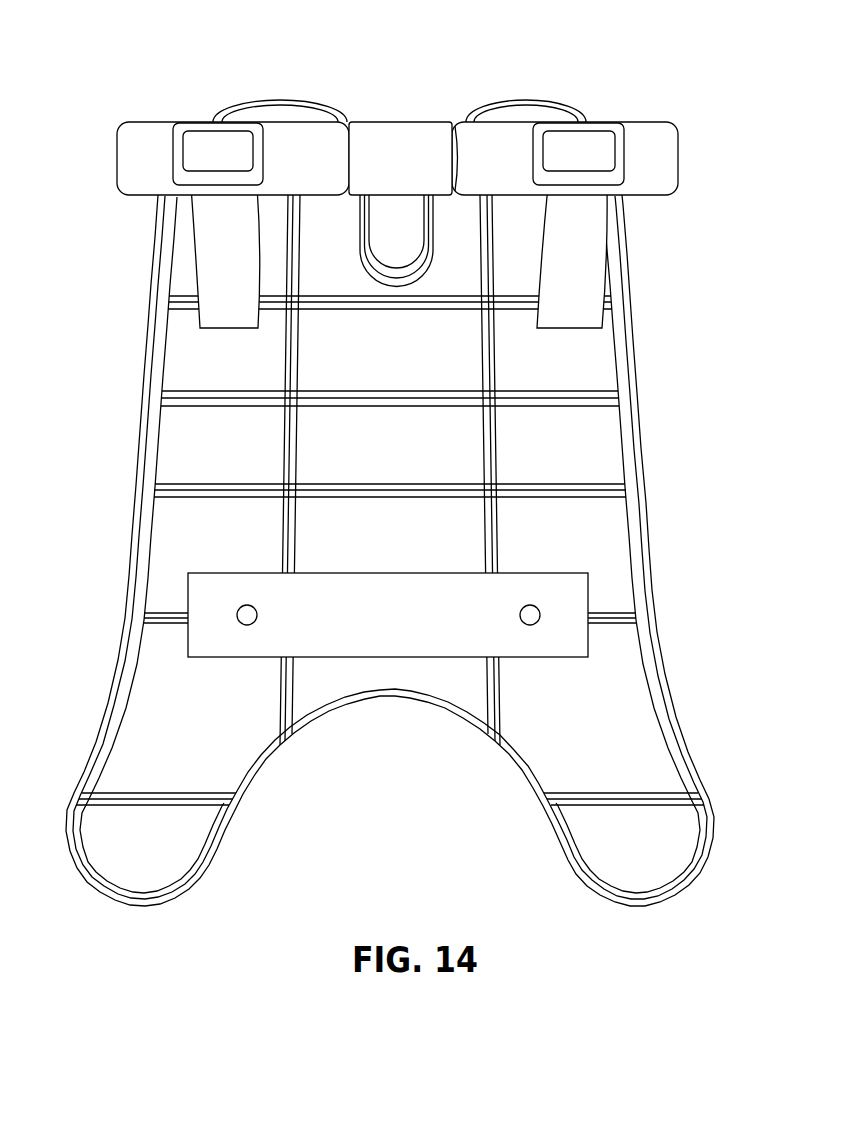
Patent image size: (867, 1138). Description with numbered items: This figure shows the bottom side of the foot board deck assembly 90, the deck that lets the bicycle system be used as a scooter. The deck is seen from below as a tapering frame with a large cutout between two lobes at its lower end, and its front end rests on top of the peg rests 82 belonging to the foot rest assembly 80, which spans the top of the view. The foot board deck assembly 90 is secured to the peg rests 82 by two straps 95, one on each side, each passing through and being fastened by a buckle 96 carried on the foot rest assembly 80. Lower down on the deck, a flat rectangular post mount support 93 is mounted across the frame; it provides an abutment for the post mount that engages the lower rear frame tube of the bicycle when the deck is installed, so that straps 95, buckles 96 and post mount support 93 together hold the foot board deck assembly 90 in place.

The foot rest assembly 80 is at (393, 150).
The peg rest 82 is at (290, 145).
The foot board deck assembly 90 is at (382, 463).
The post mount support 93 is at (388, 615).
The strap 95 is at (210, 248).
The buckle 96 is at (182, 176).